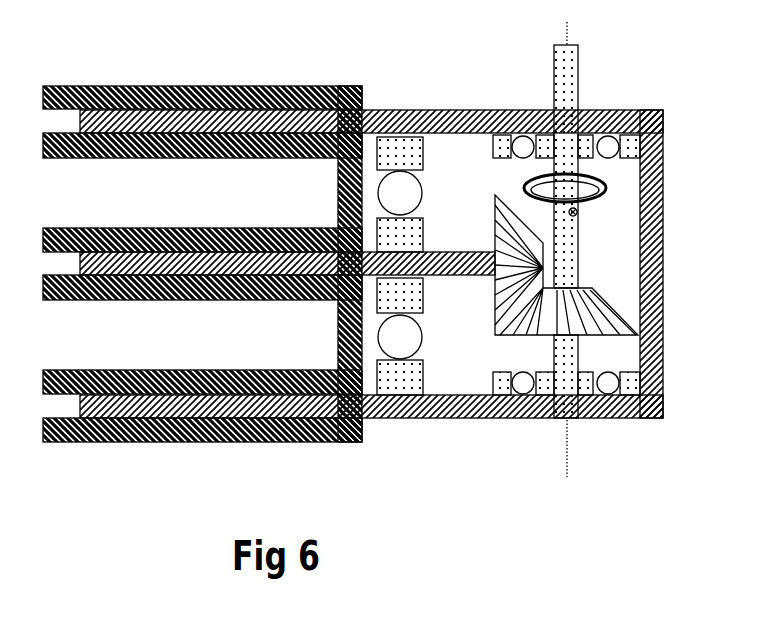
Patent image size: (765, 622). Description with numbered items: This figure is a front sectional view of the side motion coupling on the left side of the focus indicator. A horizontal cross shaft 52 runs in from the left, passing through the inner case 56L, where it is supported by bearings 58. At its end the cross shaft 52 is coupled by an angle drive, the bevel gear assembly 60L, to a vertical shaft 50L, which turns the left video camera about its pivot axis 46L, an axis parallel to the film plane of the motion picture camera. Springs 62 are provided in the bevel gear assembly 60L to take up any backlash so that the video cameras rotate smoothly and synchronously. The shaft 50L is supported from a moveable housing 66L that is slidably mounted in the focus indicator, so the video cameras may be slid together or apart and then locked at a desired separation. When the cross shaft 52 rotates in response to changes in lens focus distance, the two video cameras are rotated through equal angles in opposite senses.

The axis 46L is at (565, 44).
The shaft 50L is at (569, 382).
The cross shaft 52 is at (260, 298).
The inner case 56L is at (93, 432).
The bearings 58 is at (517, 142).
The bevel gear assembly 60L is at (577, 312).
The springs 62 is at (527, 195).
The moveable housing 66L is at (615, 402).